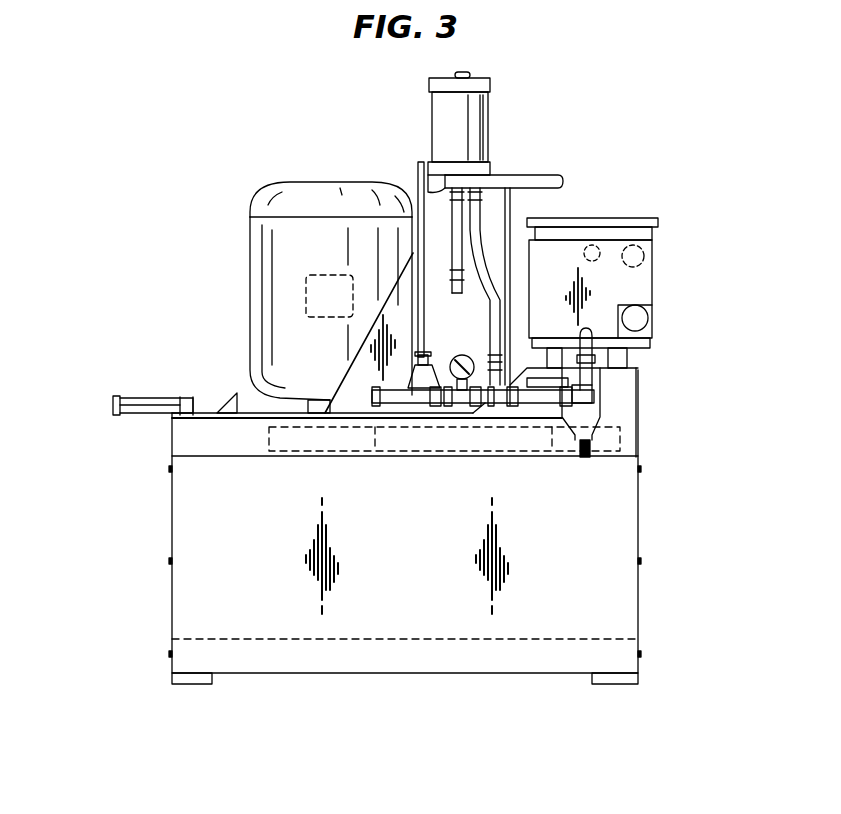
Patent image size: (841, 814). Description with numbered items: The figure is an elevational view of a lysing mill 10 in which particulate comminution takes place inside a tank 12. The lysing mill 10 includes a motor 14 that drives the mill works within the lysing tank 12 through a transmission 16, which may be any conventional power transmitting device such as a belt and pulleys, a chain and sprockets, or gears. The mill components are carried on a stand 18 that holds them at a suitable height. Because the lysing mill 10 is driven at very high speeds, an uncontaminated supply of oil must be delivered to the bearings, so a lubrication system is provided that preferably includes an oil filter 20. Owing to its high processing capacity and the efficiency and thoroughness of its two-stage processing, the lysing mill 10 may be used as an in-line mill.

The lysing mill 10 is at (167, 331).
The tank 12 is at (632, 285).
The motor 14 is at (250, 256).
The transmission 16 is at (617, 433).
The stand 18 is at (600, 548).
The oil filter 20 is at (480, 85).